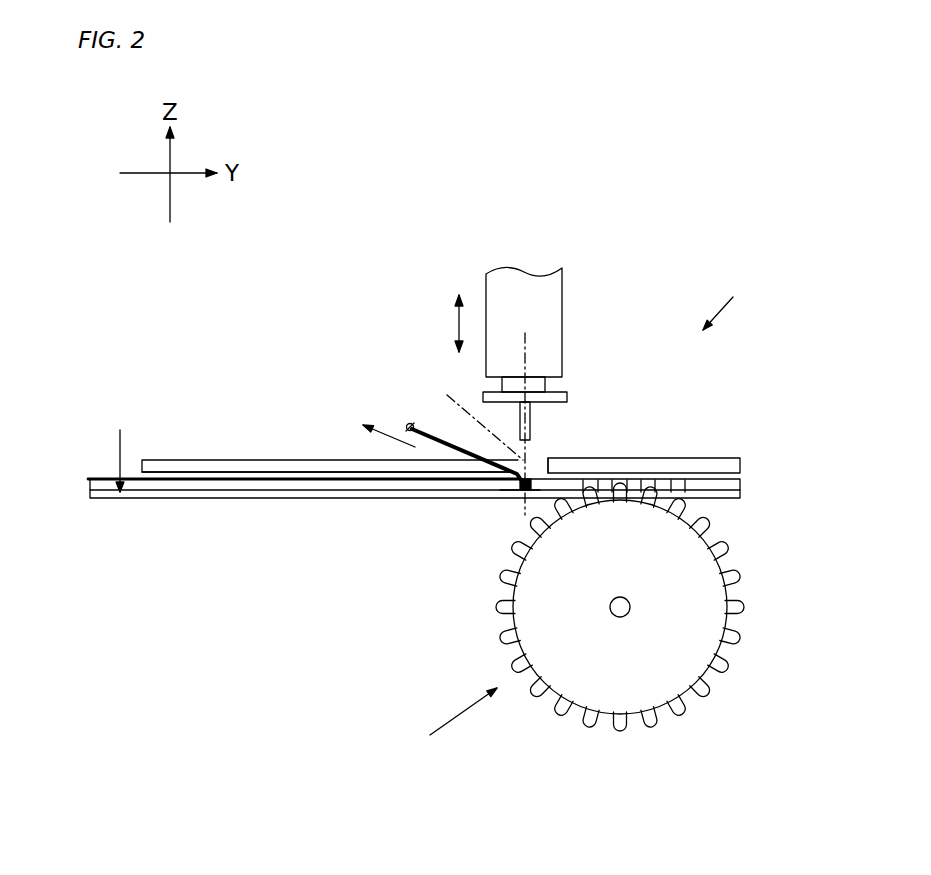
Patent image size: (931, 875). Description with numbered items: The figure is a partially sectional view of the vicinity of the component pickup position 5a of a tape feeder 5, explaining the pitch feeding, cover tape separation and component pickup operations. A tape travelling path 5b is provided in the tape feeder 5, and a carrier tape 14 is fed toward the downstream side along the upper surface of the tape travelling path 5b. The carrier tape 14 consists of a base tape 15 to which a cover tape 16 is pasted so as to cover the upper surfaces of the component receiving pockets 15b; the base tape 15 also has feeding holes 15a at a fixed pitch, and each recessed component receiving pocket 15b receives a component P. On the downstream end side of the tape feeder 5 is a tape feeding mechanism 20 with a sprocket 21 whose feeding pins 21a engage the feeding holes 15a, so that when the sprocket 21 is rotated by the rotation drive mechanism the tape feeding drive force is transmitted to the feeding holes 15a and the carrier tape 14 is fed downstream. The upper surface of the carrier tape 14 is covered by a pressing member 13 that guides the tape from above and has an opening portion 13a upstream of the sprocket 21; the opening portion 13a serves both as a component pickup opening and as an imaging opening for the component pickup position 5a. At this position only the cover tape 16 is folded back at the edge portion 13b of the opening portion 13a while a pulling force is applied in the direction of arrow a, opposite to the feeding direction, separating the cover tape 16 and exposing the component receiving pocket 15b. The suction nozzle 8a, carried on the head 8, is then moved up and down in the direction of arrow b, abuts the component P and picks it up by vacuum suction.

The tape feeder 5 is at (727, 302).
The component pickup position 5a is at (476, 414).
The tape travelling path 5b is at (119, 448).
The cutter head 8 is at (495, 283).
The suction nozzle 8a is at (530, 416).
The pressing member 13 is at (275, 462).
The opening portion 13a is at (549, 455).
The edge portion (separation portion) 13b is at (484, 464).
The carrier tape 14 is at (90, 487).
The base tape 15 is at (728, 485).
The feeding holes 15a is at (633, 458).
The component receiving pockets 15b is at (515, 490).
The cover tape 16 is at (411, 426).
The tape feeding mechanism 20 is at (446, 725).
The sprocket 21 is at (703, 643).
The feeding pins 21a is at (727, 573).
The component P is at (532, 478).
The arrow a is at (385, 436).
The arrow b is at (457, 322).